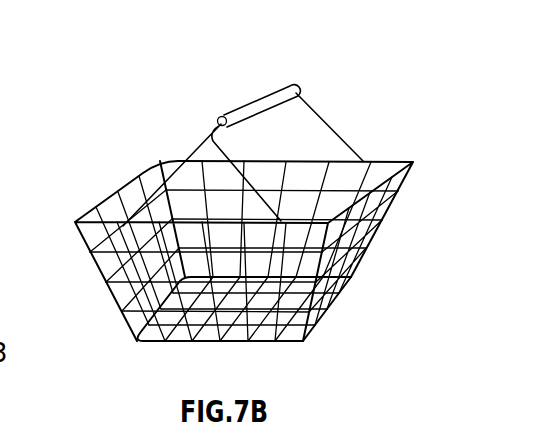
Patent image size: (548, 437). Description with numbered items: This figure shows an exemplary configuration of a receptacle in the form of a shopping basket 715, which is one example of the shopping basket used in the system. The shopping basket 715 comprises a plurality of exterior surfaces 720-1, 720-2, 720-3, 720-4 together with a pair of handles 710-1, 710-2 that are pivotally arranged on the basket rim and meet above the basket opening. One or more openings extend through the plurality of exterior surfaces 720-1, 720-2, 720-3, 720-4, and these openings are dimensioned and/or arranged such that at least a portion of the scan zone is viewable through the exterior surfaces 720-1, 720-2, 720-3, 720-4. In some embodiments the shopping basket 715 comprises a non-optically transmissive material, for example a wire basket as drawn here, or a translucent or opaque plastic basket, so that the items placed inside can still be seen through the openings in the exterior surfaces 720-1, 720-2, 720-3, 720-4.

The shopping basket 715 is at (226, 200).
The handle 710-1 is at (191, 152).
The handle 710-2 is at (326, 117).
The exterior surface 720-1 is at (231, 332).
The exterior surface 720-2 is at (92, 272).
The exterior surface 720-3 is at (370, 255).
The exterior surface 720-4 is at (278, 154).